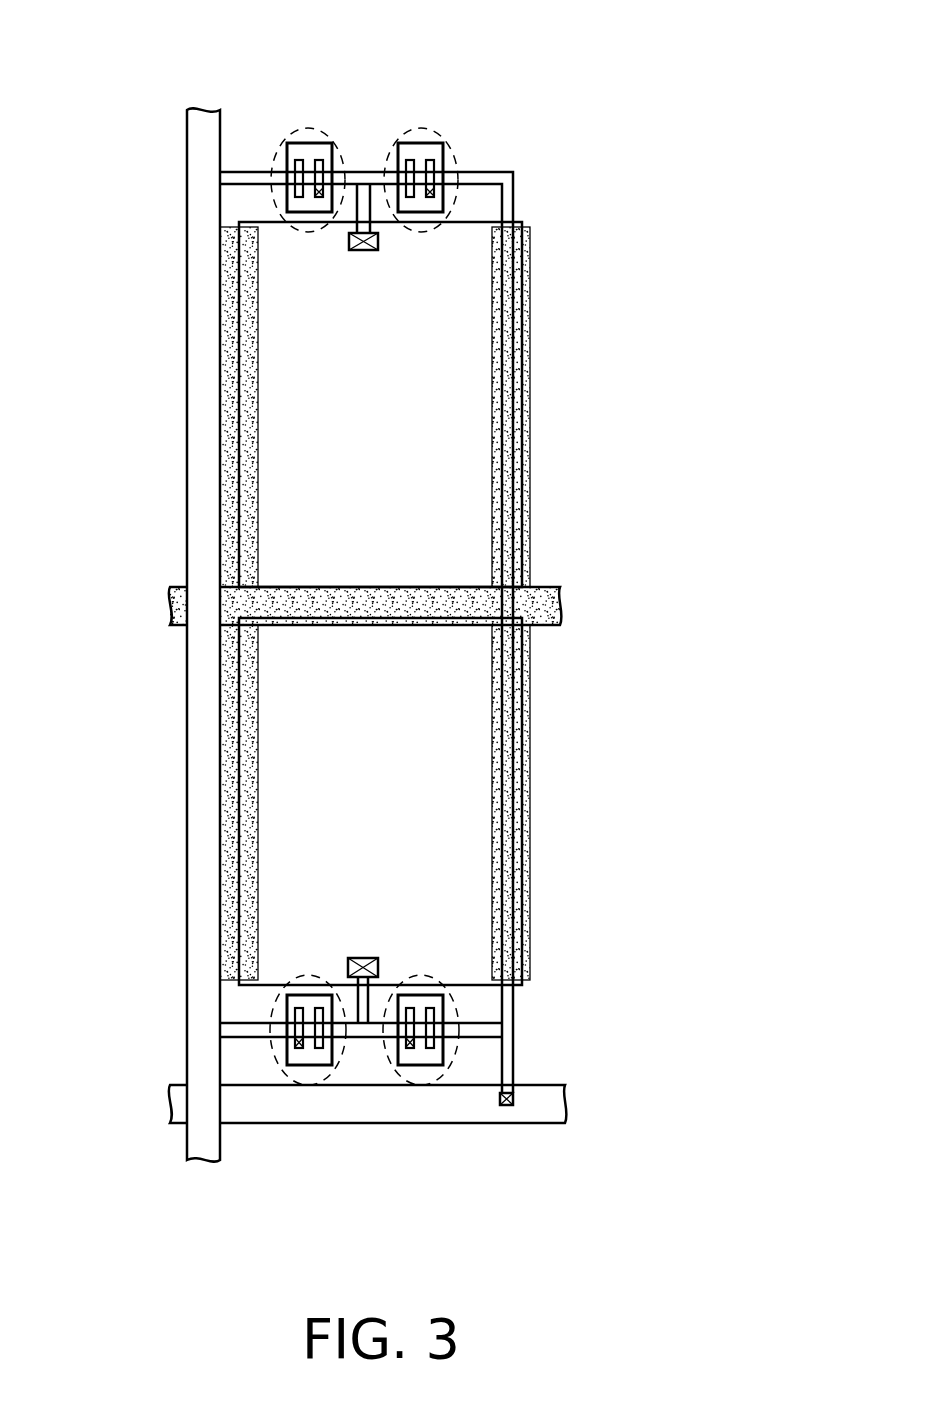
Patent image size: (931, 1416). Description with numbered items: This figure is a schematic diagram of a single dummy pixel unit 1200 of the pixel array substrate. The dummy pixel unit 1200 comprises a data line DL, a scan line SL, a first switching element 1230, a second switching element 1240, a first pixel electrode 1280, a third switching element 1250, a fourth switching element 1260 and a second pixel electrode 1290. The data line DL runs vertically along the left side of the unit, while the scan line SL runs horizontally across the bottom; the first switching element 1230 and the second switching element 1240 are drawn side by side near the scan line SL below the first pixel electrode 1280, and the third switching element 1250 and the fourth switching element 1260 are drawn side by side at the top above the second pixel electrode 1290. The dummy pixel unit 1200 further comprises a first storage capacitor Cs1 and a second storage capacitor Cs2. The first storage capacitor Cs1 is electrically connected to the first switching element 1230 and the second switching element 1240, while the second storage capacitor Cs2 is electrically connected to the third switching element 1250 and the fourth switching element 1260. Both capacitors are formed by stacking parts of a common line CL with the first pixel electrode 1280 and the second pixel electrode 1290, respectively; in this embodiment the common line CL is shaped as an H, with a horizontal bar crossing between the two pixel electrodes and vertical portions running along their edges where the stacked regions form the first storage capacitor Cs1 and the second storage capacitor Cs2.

The dummy pixel unit 1200 is at (442, 615).
The first switching element 1230 is at (273, 1012).
The second switching element 1240 is at (453, 1058).
The third switching element 1250 is at (315, 128).
The fourth switching element 1260 is at (415, 125).
The first pixel electrode 1280 is at (457, 770).
The second pixel electrode 1290 is at (463, 325).
The data line DL is at (205, 232).
The scan line SL is at (440, 1115).
The common line CL is at (257, 607).
The first storage capacitor Cs1 is at (250, 803).
The second storage capacitor Cs2 is at (243, 377).